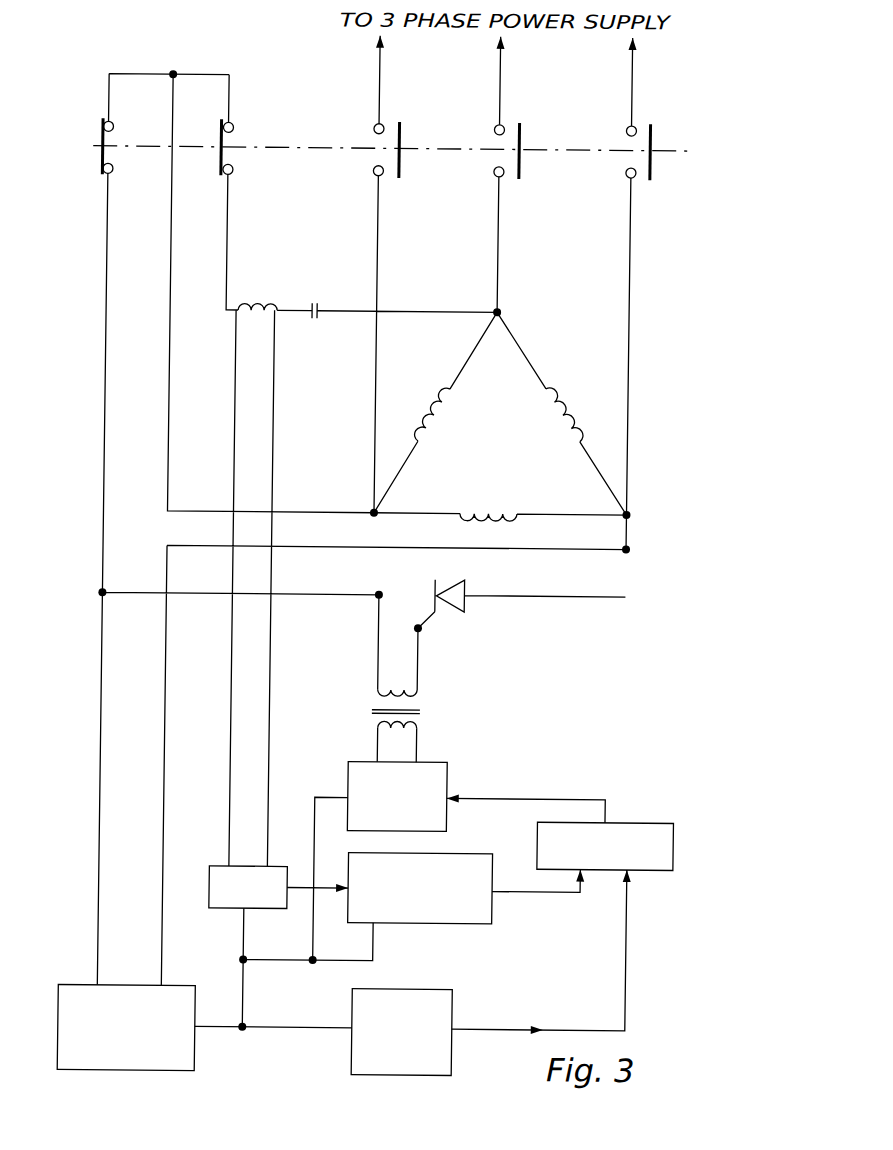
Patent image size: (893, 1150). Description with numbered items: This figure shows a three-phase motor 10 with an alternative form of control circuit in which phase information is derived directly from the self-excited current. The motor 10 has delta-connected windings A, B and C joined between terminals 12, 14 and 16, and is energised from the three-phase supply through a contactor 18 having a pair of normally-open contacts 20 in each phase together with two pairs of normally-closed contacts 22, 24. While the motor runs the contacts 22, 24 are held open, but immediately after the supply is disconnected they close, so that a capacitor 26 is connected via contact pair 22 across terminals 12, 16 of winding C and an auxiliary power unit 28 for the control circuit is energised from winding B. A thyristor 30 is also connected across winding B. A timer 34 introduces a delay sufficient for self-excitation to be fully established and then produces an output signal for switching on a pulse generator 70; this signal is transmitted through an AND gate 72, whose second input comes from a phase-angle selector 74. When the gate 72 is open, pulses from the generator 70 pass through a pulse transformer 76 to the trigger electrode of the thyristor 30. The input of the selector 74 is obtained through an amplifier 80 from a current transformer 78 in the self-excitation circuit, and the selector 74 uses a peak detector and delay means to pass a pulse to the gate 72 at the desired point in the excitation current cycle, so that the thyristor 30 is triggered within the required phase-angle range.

The three-phase motor 10 is at (546, 366).
The terminal 12 is at (494, 312).
The terminal 14 is at (626, 513).
The terminal 16 is at (374, 513).
The contactor 18 is at (582, 148).
The normally-open contacts 20 is at (394, 164).
The normally-closed contacts 22 is at (224, 158).
The normally-closed contacts 24 is at (104, 158).
The capacitor 26 is at (306, 306).
The auxiliary power unit 28 is at (188, 987).
The thyristor 30 is at (470, 589).
The timer 34 is at (459, 1002).
The pulse generator 70 is at (450, 768).
The AND gate 72 is at (658, 821).
The phase-angle selector 74 is at (483, 924).
The pulse transformer 76 is at (430, 708).
The current transformer 78 is at (258, 304).
The amplifier 80 is at (219, 867).